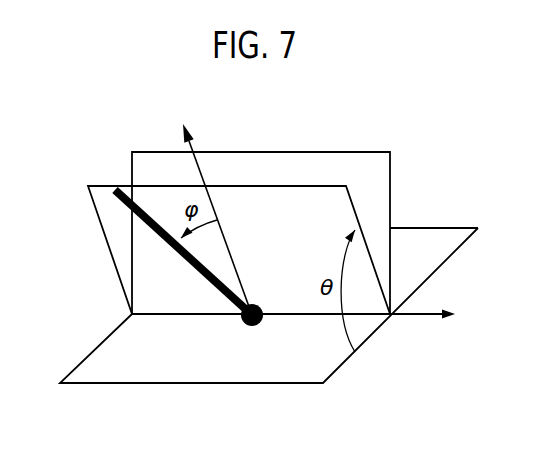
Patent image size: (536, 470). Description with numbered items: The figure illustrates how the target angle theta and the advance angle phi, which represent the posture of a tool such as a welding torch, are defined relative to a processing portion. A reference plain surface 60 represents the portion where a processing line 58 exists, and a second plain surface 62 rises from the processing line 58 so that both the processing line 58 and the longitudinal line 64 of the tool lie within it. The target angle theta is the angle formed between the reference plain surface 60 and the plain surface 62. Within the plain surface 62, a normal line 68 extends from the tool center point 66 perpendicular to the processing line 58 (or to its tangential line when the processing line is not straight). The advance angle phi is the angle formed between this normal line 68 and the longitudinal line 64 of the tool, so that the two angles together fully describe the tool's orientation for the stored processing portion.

The processing line 58 is at (368, 316).
The reference plain surface 60 is at (320, 367).
The plain surface 62 is at (123, 250).
The longitudinal line 64 is at (122, 198).
The tool center point 66 is at (262, 327).
The normal line 68 is at (192, 143).